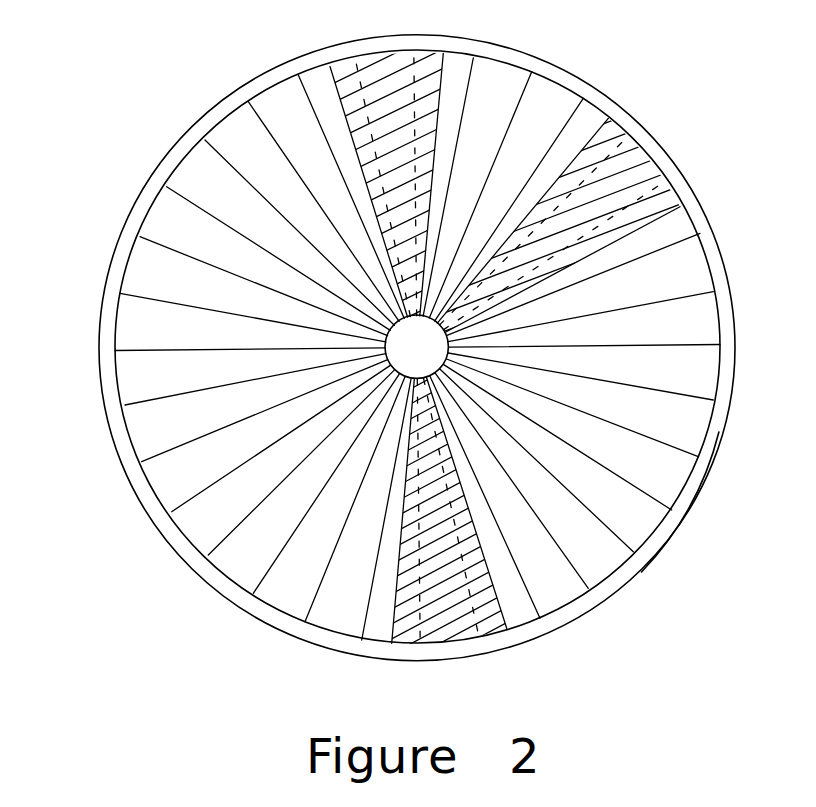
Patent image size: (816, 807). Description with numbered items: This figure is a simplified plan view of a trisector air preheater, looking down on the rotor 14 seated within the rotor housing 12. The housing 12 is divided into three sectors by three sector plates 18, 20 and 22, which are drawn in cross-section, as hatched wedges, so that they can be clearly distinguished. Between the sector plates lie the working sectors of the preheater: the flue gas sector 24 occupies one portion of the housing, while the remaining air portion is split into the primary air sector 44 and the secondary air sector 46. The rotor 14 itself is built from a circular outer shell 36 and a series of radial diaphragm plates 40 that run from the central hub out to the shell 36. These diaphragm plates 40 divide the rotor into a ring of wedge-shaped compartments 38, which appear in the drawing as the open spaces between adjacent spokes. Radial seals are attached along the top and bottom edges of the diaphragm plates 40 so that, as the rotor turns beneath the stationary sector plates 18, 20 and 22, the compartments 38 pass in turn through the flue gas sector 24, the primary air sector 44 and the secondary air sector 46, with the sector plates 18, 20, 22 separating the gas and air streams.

The rotor housing 12 is at (103, 316).
The rotor 14 is at (688, 484).
The sector plate 18 is at (458, 635).
The sector plate 20 is at (364, 56).
The sector plate 22 is at (635, 173).
The flue gas sector 24 is at (157, 272).
The shell 36 is at (706, 440).
The compartments 38 is at (247, 560).
The diaphragm plates 40 is at (163, 398).
The primary air sector 44 is at (548, 105).
The secondary air sector 46 is at (640, 527).